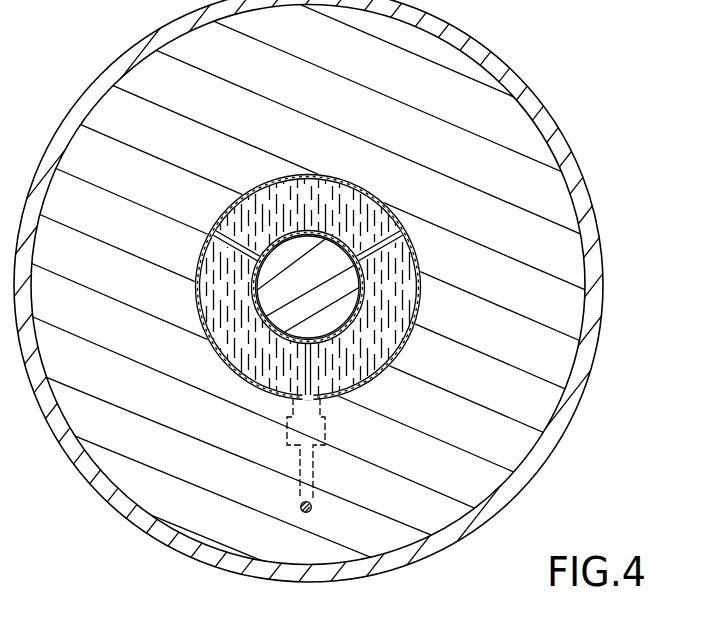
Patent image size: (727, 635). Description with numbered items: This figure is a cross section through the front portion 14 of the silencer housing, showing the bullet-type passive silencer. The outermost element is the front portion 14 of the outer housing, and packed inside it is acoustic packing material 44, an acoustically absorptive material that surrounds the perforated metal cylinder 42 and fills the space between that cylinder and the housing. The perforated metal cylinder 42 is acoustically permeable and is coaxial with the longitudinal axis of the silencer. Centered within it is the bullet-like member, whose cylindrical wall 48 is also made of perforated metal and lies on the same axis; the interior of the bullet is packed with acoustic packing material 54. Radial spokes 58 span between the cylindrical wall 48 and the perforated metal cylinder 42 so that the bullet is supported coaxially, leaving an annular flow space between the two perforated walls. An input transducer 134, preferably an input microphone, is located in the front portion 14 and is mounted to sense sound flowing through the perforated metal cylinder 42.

The front portion 14 is at (434, 25).
The acoustic packing material 44 is at (344, 108).
The perforated metal cylinder 42 is at (405, 227).
The radial spokes 58 is at (387, 240).
The cylindrical wall 48 is at (357, 322).
The acoustic packing material 54 is at (322, 302).
The input transducer 134 is at (330, 436).